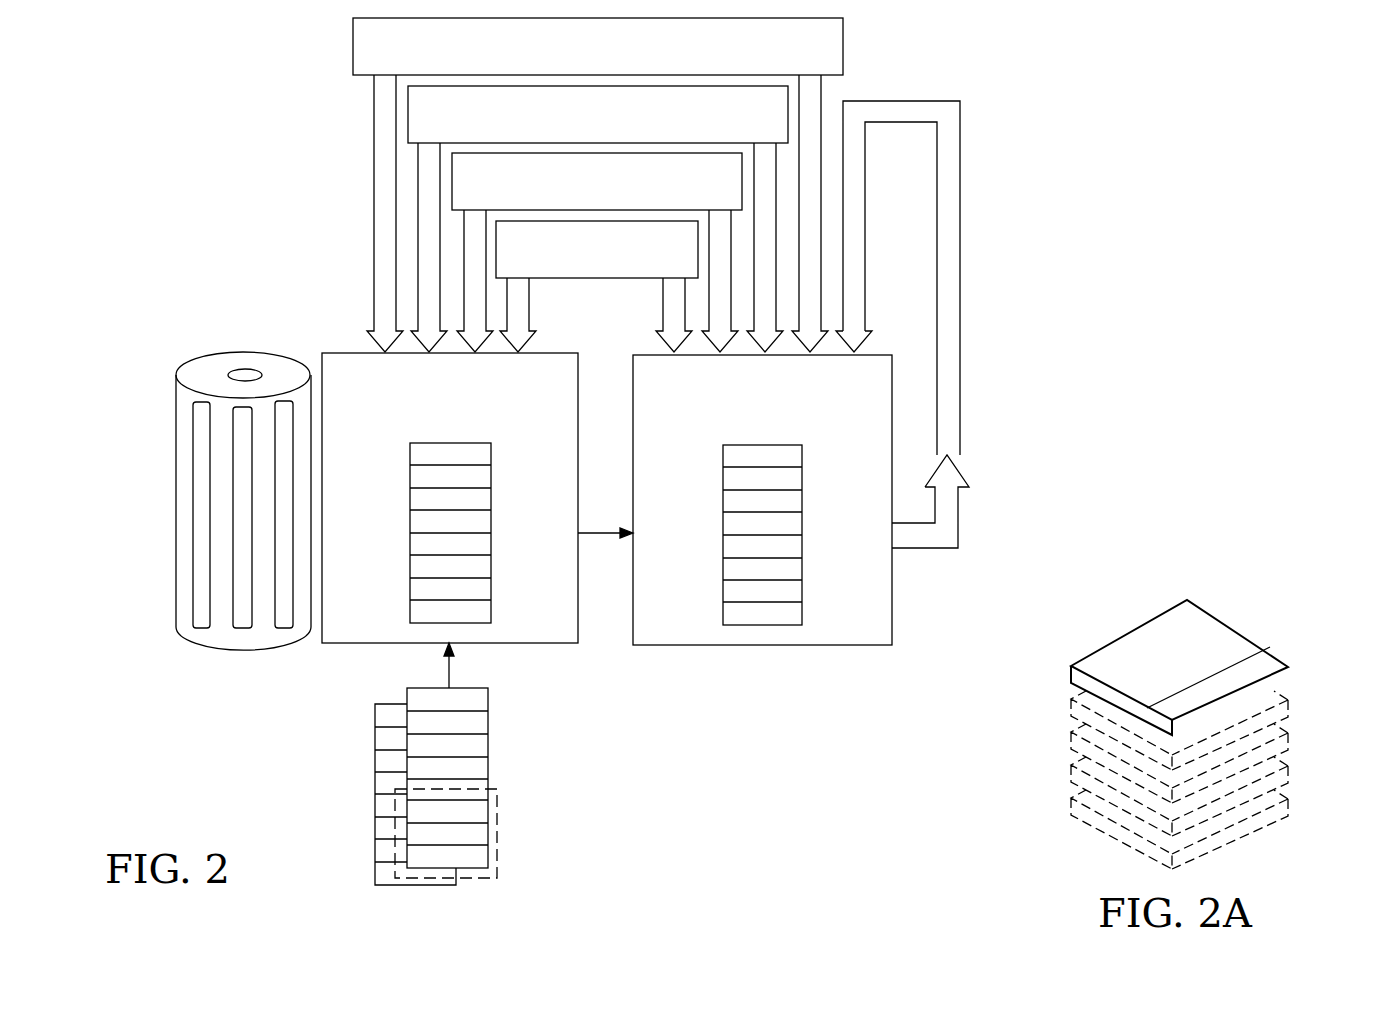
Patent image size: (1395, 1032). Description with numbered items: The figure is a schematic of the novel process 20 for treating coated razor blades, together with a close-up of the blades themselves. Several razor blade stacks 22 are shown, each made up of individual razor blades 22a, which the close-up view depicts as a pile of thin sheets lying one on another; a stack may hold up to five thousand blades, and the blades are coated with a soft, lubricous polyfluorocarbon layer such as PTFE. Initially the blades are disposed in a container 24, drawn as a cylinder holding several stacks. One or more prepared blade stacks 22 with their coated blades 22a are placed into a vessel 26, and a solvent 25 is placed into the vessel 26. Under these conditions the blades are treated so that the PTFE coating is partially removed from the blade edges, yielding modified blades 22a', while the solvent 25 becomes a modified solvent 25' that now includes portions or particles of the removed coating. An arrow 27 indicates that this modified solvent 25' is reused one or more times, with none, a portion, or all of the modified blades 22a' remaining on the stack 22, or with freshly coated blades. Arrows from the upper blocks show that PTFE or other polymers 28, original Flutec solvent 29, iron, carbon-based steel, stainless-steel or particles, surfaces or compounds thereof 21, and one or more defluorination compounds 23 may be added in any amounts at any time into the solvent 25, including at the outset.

In FIG. 2, the process 20 is at (1113, 144).
In FIG. 2, the iron, carbon-based steel, stainless-steel, or particles, surfaces or compounds t 21 is at (582, 262).
In FIG. 2, the razor blade stack 22 is at (201, 630).
In FIG. 2, the razor blade 22a is at (344, 703).
In FIG. 2A, the razor blade 22a is at (1233, 719).
In FIG. 2, the modified blade 22a' is at (801, 544).
In FIG. 2, the defluorination compound 23 is at (582, 194).
In FIG. 2, the container 24 is at (174, 462).
In FIG. 2, the solvent 25 is at (477, 520).
In FIG. 2, the modified solvent 25' is at (762, 500).
In FIG. 2, the vessel 26 is at (339, 350).
In FIG. 2, the arrow 27 is at (965, 270).
In FIG. 2, the polymer 28 is at (583, 61).
In FIG. 2, the original Flutec solvent 29 is at (583, 127).